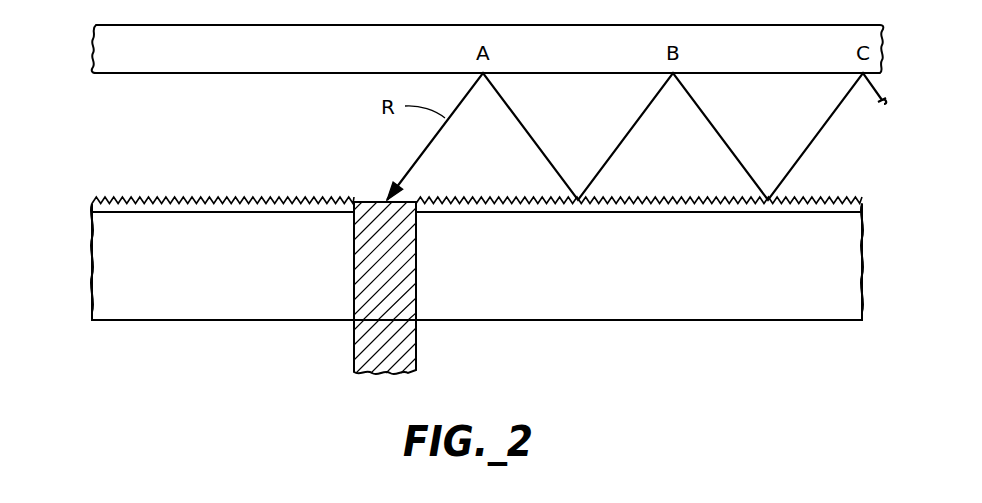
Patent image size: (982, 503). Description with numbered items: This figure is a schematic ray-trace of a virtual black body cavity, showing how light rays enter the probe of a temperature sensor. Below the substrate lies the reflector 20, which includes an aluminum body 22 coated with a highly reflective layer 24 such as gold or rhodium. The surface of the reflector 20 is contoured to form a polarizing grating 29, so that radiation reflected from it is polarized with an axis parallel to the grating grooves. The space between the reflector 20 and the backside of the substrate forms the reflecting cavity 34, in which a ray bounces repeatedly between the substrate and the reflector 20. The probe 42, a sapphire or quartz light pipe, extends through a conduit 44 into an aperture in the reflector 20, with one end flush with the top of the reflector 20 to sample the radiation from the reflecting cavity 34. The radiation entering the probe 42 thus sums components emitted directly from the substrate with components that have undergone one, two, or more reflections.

The reflector 20 is at (448, 259).
The aluminum body 22 is at (730, 321).
The highly reflective layer 24 is at (656, 200).
The polarizing grating 29 is at (185, 197).
The reflecting cavity 34 is at (295, 145).
The probe 42 is at (418, 362).
The conduit 44 is at (418, 263).